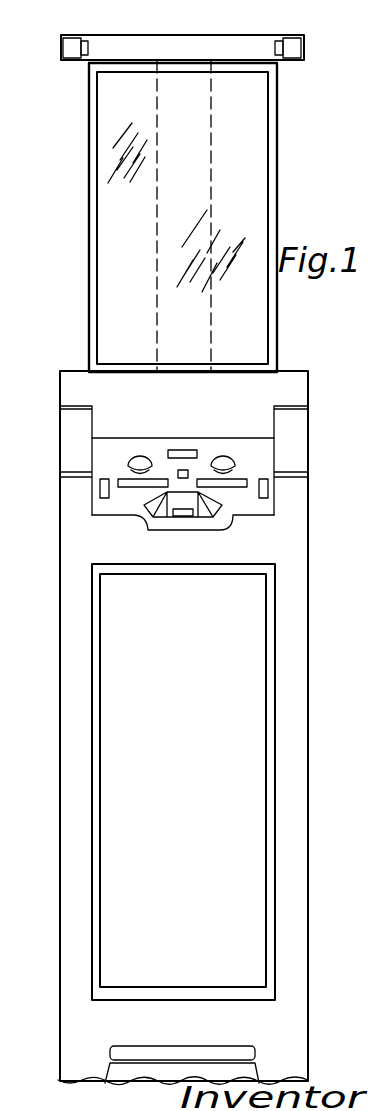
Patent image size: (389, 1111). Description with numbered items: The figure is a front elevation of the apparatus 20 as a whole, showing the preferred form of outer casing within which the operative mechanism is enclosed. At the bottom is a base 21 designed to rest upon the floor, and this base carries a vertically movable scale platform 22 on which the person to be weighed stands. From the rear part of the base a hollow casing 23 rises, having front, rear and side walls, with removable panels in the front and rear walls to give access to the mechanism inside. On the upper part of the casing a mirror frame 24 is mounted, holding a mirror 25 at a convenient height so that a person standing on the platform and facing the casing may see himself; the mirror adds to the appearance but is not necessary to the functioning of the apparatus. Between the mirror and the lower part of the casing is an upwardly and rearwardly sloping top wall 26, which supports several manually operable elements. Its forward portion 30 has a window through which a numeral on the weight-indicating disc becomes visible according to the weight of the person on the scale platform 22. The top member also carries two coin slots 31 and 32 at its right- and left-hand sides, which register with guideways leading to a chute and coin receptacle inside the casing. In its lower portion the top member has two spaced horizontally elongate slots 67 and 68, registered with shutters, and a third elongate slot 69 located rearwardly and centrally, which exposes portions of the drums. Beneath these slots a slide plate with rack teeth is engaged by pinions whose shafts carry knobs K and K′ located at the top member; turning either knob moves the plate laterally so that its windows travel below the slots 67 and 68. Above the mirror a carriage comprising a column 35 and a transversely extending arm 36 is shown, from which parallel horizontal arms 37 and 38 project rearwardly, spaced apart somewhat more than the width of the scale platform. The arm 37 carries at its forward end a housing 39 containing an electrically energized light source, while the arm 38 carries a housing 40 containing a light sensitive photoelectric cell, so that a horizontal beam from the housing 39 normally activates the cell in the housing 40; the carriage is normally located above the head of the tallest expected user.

The apparatus 20 is at (335, 629).
The base 21 is at (250, 1067).
The scale platform 22 is at (236, 1053).
The hollow casing 23 is at (137, 782).
The mirror frame 24 is at (273, 176).
The mirror 25 is at (257, 147).
The top wall 26 is at (262, 455).
The forward portion of top member 30 is at (200, 513).
The coin slot 31 is at (270, 489).
The coin slot 32 is at (98, 492).
The column 35 is at (3, 27).
The transversely extending arm 36 is at (210, 30).
The horizontal arm 37 is at (305, 50).
The horizontal arm 38 is at (62, 50).
The housing 39 is at (300, 30).
The housing 40 is at (80, 25).
The horizontally elongate slot 67 is at (133, 483).
The horizontally elongate slot 68 is at (240, 483).
The horizontally elongate slot 69 is at (200, 423).
The knob K is at (133, 457).
The knob K′ is at (233, 456).